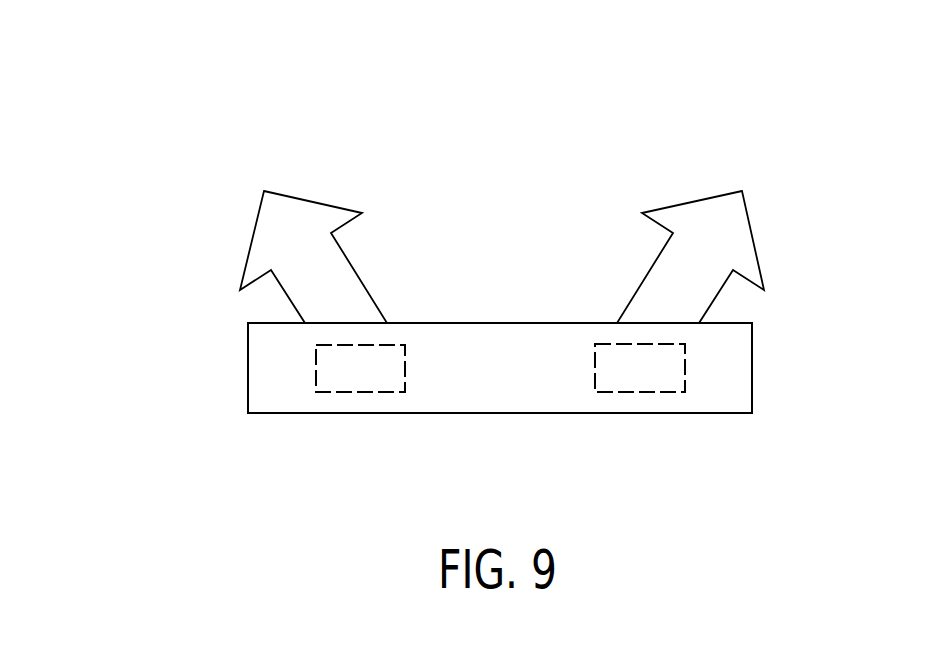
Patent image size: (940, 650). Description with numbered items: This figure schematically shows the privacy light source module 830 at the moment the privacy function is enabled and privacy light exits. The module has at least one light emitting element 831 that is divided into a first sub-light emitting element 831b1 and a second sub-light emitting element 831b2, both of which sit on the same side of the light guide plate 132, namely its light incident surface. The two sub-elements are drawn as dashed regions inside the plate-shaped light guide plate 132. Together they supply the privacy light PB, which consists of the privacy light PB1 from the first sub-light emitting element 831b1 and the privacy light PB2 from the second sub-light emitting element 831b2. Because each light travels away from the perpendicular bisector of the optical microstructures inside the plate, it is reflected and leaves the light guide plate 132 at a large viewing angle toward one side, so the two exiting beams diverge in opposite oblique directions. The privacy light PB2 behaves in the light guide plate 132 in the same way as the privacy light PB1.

The privacy light source module 830 is at (905, 478).
The light emitting element 831 is at (93, 3).
The first sub-light emitting element 831b1 is at (632, 393).
The second sub-light emitting element 831b2 is at (368, 393).
The light guide plate 132 is at (718, 400).
The privacy light PB is at (259, 3).
The privacy light PB1 is at (260, 229).
The privacy light PB2 is at (739, 230).